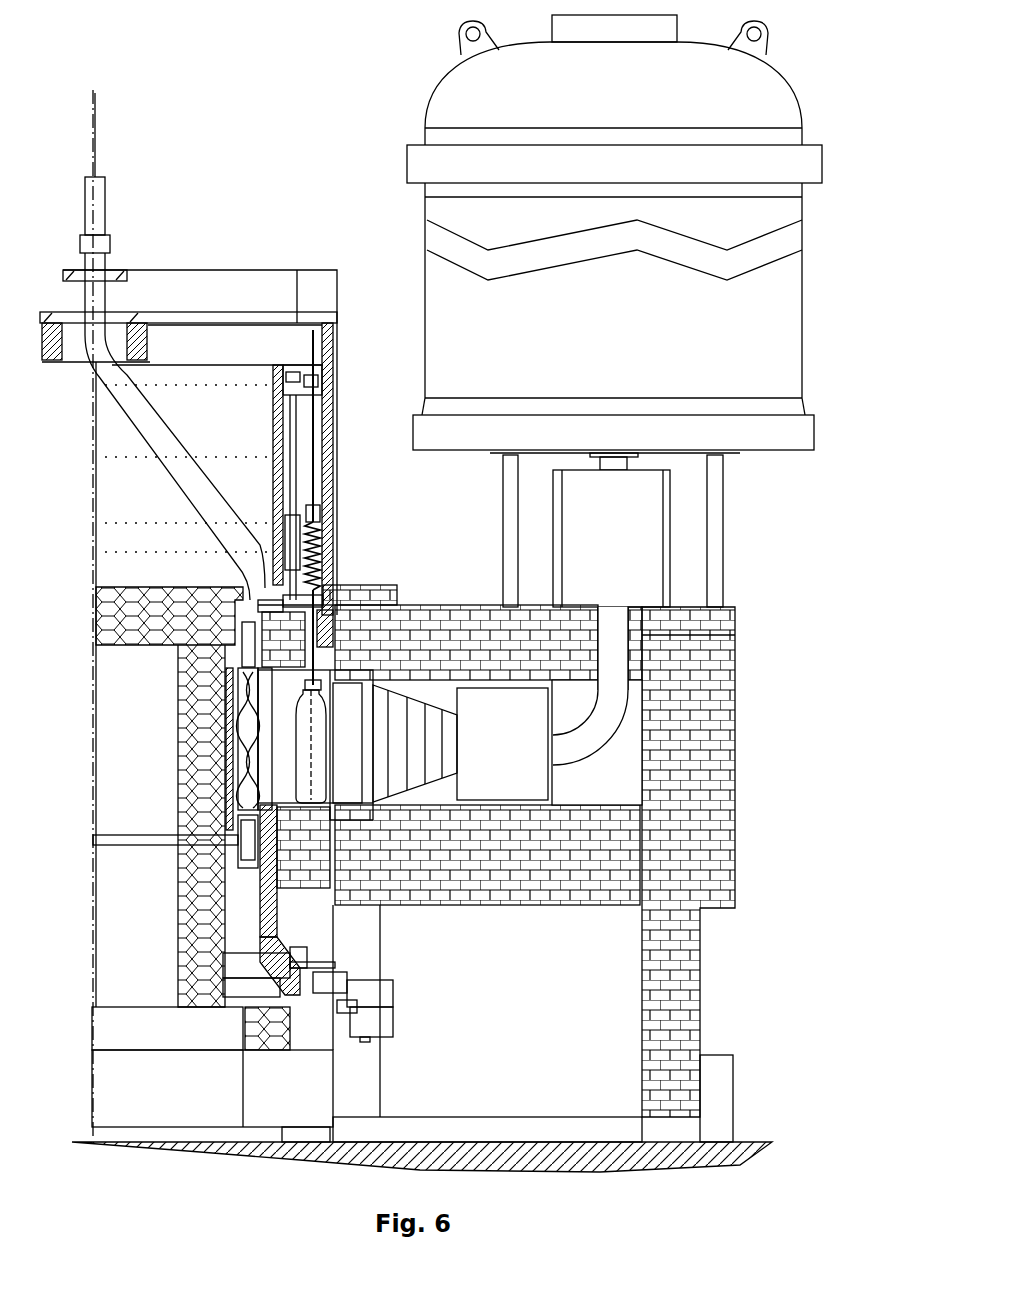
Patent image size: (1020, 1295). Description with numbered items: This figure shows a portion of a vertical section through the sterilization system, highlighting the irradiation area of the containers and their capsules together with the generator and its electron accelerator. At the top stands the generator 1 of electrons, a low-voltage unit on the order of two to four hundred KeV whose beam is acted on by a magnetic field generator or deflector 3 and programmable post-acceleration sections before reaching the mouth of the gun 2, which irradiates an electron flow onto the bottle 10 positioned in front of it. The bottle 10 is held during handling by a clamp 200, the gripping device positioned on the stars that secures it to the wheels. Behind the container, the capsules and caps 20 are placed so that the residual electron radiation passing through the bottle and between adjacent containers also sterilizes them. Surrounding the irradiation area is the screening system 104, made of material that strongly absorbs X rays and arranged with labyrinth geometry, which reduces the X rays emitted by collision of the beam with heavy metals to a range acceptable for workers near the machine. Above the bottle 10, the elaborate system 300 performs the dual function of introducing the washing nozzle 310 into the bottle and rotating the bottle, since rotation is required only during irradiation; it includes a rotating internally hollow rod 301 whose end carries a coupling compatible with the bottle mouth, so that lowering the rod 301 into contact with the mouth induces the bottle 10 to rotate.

The generator of electrons 1 is at (487, 310).
The gun 2 is at (400, 727).
The magnetic field generator or deflector 3 is at (353, 713).
The bottle 10 is at (298, 747).
The capsules and caps 20 is at (238, 738).
The screening system 104 is at (185, 900).
The clamp 200 is at (283, 686).
The elaborate system 300 is at (270, 542).
The rotating internally hollow rod 301 is at (323, 567).
The washing nozzle 310 is at (318, 489).